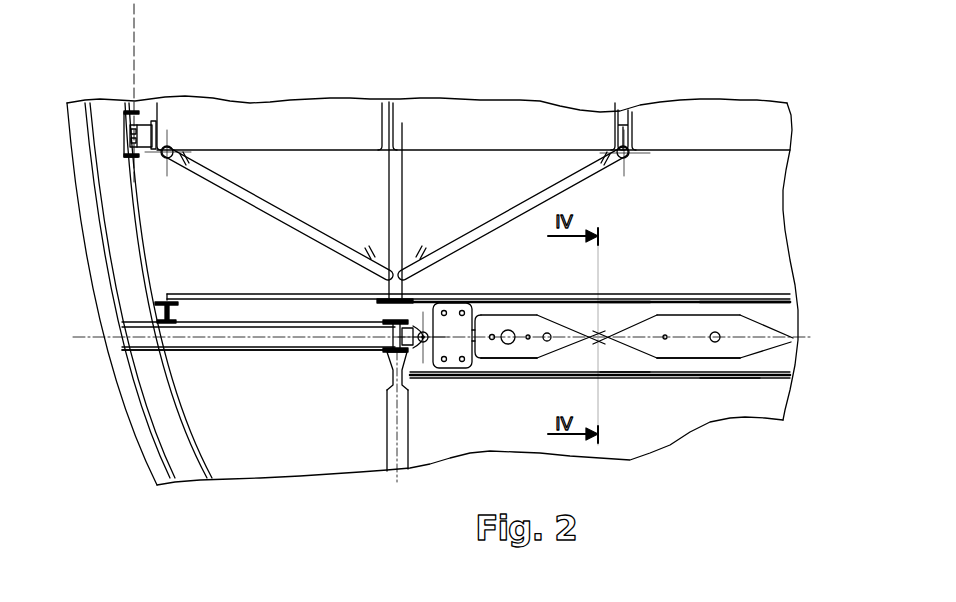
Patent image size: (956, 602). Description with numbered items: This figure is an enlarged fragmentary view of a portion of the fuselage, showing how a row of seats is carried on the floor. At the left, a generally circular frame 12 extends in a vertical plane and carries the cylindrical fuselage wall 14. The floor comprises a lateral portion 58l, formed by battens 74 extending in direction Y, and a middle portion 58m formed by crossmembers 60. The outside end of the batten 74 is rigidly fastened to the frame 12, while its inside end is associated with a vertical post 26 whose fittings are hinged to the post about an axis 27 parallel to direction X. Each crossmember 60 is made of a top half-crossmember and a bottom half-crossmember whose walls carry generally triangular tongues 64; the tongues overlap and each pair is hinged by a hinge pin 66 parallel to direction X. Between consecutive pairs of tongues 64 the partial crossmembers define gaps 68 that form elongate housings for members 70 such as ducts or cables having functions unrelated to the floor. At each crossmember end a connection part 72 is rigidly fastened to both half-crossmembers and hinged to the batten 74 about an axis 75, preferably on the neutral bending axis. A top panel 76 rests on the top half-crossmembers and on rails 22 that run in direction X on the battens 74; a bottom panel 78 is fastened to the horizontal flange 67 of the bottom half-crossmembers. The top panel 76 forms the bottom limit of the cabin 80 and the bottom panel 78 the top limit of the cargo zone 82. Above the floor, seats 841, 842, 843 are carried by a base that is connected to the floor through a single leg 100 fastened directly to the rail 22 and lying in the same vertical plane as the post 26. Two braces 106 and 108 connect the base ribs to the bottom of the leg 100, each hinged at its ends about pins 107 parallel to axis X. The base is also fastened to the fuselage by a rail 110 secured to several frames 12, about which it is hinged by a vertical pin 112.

The frame 12 is at (120, 245).
The wall 14 is at (104, 302).
The rail 22 is at (173, 310).
The post 26 is at (387, 447).
The axis 27 is at (383, 358).
The lateral portion 58l is at (216, 356).
The middle portion 58m is at (805, 312).
The crossmember 60 is at (658, 342).
The tongue 64 is at (614, 302).
The hinge pin 66 is at (585, 348).
The flange 67 is at (722, 380).
The gap 68 is at (489, 362).
The member 70 is at (505, 330).
The connection part 72 is at (455, 316).
The batten 74 is at (293, 342).
The axis 75 is at (423, 332).
The top panel 76 is at (237, 292).
The bottom panel 78 is at (505, 380).
The airplane cabin 80 is at (720, 208).
The airplane cargo zone 82 is at (301, 445).
The seat 841 is at (718, 120).
The seat 842 is at (514, 122).
The seat 843 is at (315, 120).
The leg 100 is at (397, 178).
The brace 106 is at (263, 202).
The pin 107 is at (170, 150).
The brace 108 is at (552, 193).
The rail 110 is at (132, 107).
The vertical pin 112 is at (137, 15).